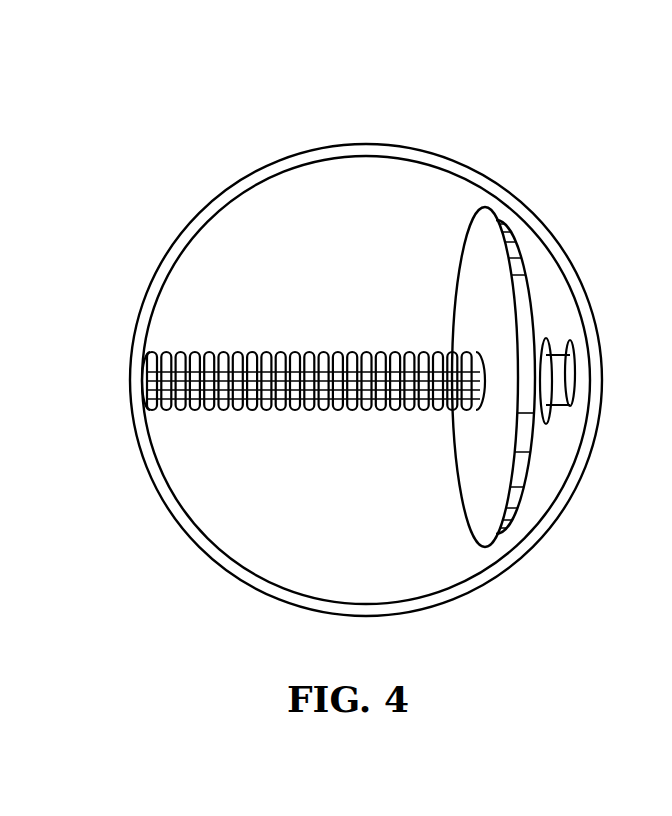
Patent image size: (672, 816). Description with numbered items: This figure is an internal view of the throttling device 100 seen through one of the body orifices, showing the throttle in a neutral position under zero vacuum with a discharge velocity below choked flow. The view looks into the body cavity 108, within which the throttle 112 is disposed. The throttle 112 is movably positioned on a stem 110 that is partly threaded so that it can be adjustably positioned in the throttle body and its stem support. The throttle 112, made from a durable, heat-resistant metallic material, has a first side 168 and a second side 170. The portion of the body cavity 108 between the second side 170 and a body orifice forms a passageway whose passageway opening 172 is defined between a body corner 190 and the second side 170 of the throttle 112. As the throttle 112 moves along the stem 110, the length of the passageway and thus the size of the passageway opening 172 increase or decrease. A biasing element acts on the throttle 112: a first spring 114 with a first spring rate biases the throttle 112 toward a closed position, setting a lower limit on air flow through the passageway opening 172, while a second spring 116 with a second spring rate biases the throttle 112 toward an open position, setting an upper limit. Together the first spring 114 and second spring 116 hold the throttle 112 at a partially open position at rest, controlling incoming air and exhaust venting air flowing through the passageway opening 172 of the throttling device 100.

The throttling device 100 is at (230, 125).
The body cavity 108 is at (435, 292).
The stem 110 is at (400, 362).
The throttle 112 is at (513, 533).
The first spring 114 is at (232, 408).
The second spring 116 is at (547, 343).
The first side 168 is at (500, 336).
The second side 170 is at (565, 452).
The passageway opening 172 is at (537, 468).
The body corner 190 is at (570, 437).